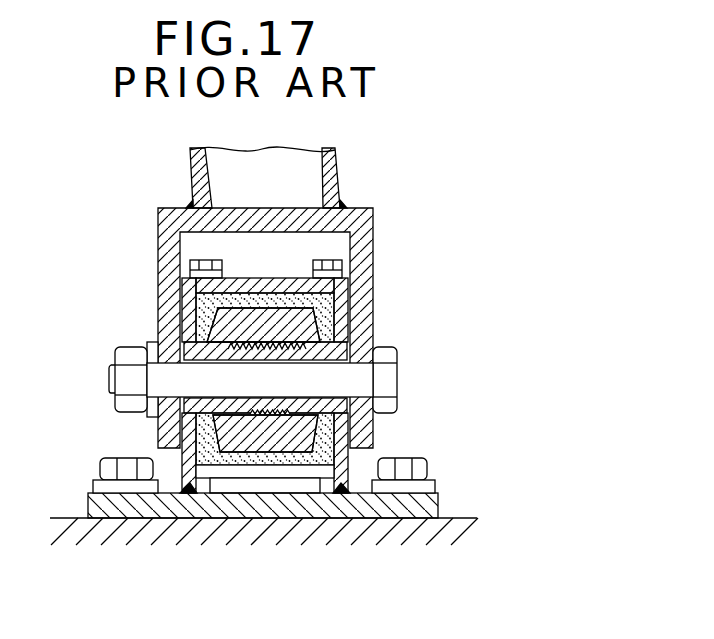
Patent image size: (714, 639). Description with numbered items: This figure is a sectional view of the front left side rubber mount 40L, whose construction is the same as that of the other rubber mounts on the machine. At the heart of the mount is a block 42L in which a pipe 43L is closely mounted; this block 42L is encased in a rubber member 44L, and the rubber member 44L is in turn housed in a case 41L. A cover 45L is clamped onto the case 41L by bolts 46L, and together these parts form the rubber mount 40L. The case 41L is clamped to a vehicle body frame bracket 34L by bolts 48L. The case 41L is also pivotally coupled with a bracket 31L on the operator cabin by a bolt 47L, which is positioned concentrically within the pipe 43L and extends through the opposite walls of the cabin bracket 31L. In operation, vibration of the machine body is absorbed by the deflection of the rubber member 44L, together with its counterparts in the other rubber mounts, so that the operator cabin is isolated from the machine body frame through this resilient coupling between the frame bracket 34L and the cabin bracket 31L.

The bracket 31L is at (365, 282).
The vehicle body frame bracket 34L is at (375, 532).
The front left side rubber mount 40L is at (452, 310).
The case 41L is at (190, 325).
The block 42L is at (275, 445).
The pipe 43L is at (238, 413).
The rubber member 44L is at (203, 305).
The cover 45L is at (253, 277).
The bolts 46L is at (330, 262).
The bolt 47L is at (388, 380).
The bolts 48L is at (127, 462).